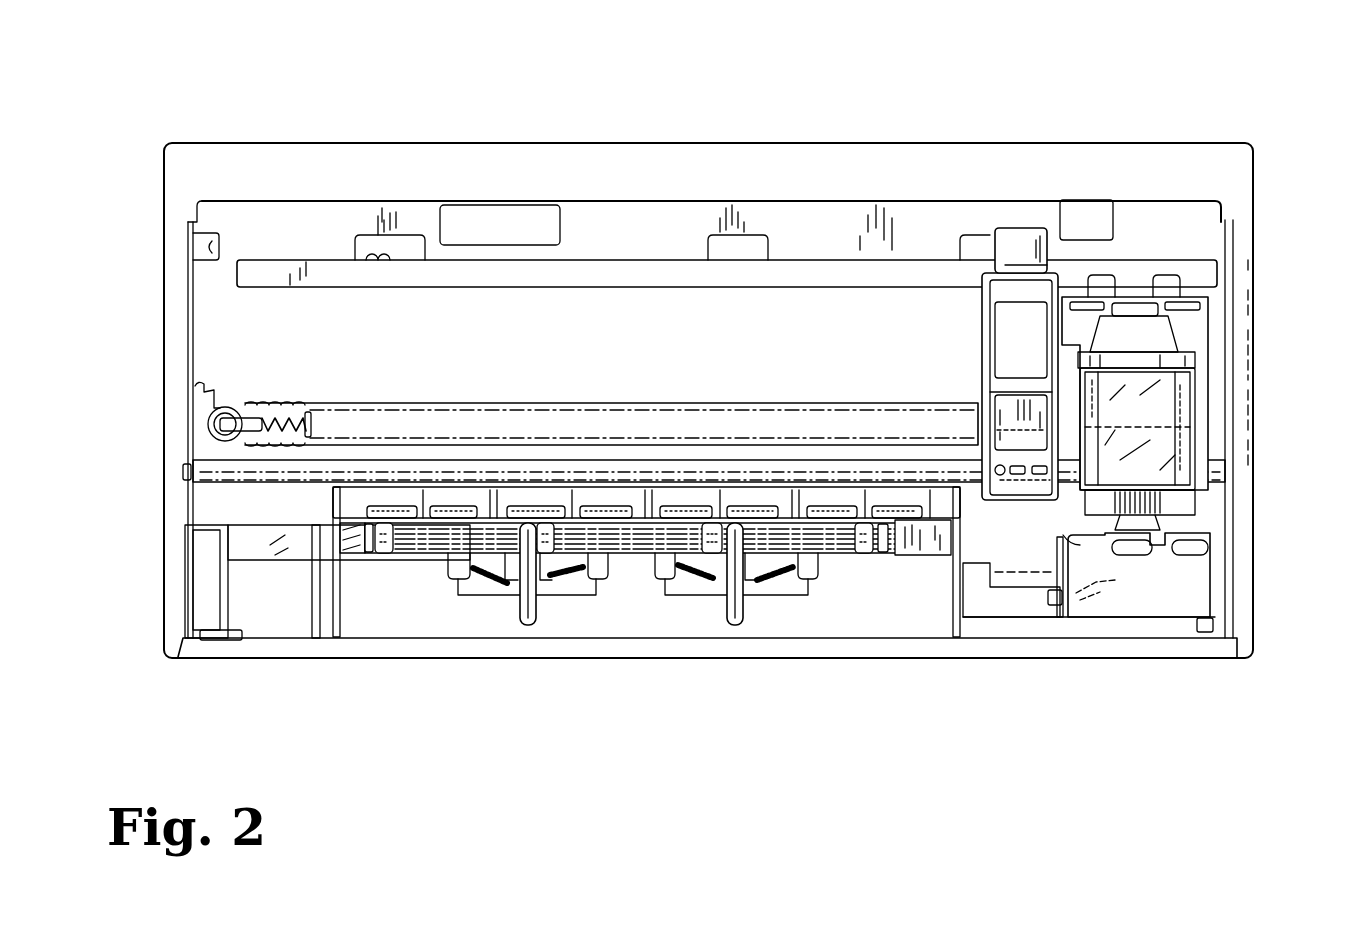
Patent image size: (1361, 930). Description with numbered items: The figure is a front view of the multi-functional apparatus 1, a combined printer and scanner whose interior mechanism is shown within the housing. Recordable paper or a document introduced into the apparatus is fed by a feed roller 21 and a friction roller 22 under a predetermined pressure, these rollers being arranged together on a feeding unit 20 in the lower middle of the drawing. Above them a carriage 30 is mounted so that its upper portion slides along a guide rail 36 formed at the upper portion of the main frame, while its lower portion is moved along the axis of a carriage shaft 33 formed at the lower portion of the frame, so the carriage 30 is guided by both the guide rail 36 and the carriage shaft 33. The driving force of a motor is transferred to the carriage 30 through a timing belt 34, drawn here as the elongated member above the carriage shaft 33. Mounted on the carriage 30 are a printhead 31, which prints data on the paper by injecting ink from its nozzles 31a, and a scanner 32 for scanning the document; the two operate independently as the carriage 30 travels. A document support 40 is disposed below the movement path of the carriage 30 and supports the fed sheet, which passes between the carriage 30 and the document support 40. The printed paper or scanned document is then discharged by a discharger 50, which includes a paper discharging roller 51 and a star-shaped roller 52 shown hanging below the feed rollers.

The printer housing 1 is at (408, 65).
The roller shaft 20 is at (866, 565).
The feed roller 21 is at (928, 497).
The friction roller 22 is at (907, 513).
The carriage 30 is at (1127, 222).
The printhead 31 is at (1197, 280).
The nozzles 31a is at (1157, 515).
The scanner 32 is at (1013, 220).
The carriage shaft 33 is at (223, 473).
The timing belt 34 is at (270, 403).
The guide rail 36 is at (782, 260).
The document support 40 is at (280, 516).
The discharger 50 is at (697, 628).
The paper discharging roller 51 is at (742, 600).
The star-shaped roller 52 is at (713, 578).